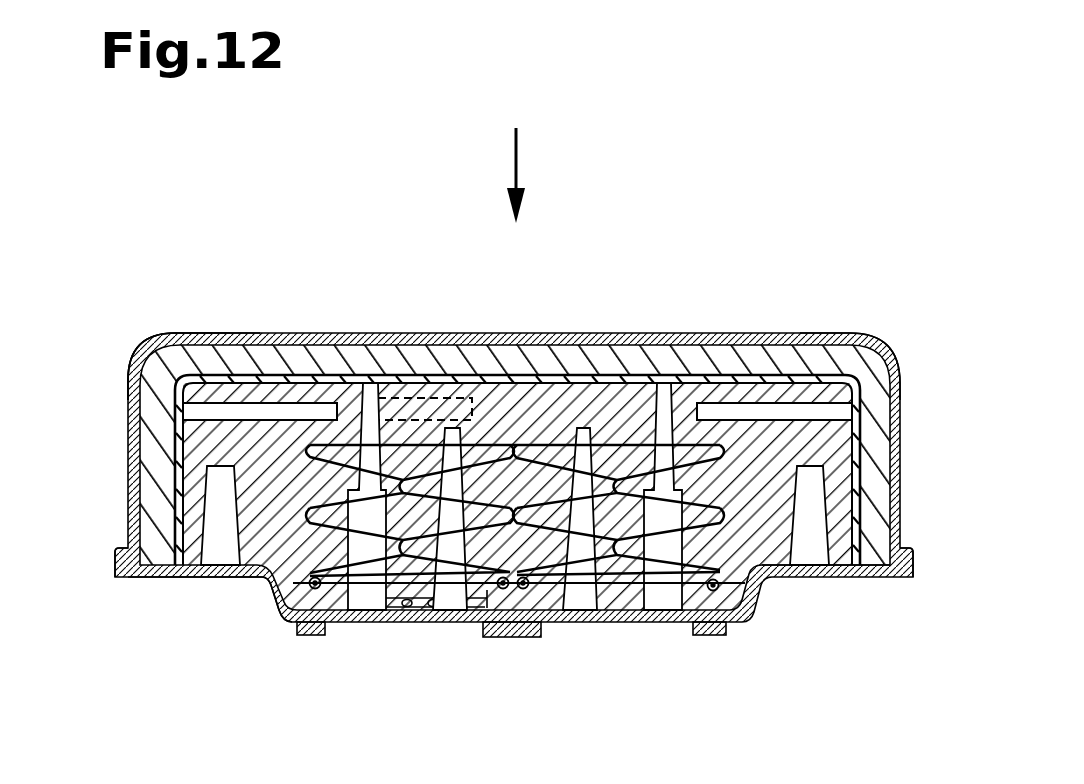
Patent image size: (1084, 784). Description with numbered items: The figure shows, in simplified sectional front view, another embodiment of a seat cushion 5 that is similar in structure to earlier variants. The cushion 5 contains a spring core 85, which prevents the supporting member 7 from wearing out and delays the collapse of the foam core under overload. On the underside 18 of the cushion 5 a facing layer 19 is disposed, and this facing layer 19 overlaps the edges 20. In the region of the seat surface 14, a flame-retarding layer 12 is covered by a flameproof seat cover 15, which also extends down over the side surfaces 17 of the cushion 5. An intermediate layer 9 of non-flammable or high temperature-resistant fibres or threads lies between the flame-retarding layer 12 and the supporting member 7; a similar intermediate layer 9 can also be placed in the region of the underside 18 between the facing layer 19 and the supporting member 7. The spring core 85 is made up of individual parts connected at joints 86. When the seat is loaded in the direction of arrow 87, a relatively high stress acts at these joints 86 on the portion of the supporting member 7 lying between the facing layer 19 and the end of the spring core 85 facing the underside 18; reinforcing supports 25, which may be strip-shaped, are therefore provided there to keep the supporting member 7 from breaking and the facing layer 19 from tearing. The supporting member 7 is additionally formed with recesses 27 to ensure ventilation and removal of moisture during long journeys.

The seat cushion 5 is at (222, 234).
The supporting member 7 is at (598, 420).
The intermediate layer 9 is at (278, 372).
The flame-retarding layer 12 is at (418, 350).
The seat surface 14 is at (195, 330).
The flameproof seat cover 15 is at (843, 340).
The side surfaces 17 is at (916, 374).
The underside 18 is at (230, 632).
The facing layer 19 is at (852, 580).
The edges 20 is at (133, 578).
The reinforcing supports 25 is at (318, 636).
The recesses 27 is at (735, 414).
The spring core 85 is at (663, 592).
The joints 86 is at (312, 588).
The arrow 87 is at (523, 166).